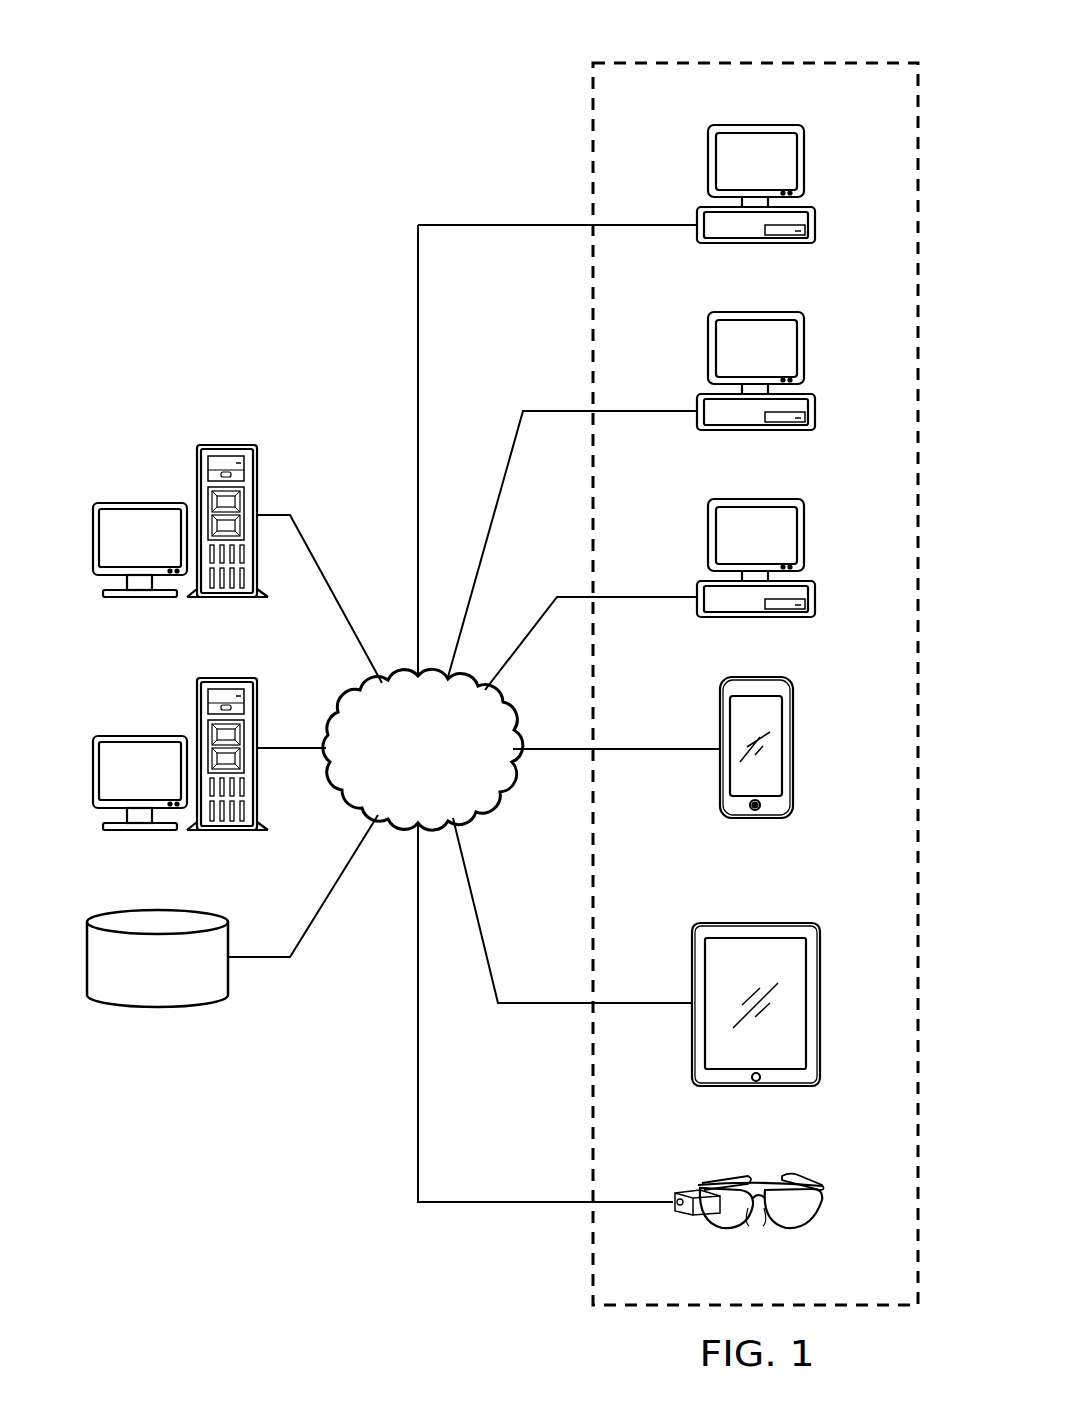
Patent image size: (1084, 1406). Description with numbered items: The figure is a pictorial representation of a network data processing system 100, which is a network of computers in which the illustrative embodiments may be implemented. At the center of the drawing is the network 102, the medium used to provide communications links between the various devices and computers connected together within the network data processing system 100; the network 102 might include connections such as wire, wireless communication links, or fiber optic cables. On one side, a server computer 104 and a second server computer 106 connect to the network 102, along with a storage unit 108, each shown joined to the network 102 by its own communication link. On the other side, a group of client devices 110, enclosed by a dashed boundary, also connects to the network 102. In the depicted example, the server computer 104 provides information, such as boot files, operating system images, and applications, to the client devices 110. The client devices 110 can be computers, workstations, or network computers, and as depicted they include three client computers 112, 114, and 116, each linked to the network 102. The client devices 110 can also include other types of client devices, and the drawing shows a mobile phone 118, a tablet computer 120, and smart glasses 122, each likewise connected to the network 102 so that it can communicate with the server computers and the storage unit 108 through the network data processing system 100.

The network data processing system 100 is at (276, 311).
The network 102 is at (440, 783).
The server computer 104 is at (140, 502).
The server computer 106 is at (140, 736).
The storage unit 108 is at (157, 1007).
The client devices 110 is at (831, 50).
The client computer 112 is at (803, 163).
The client computer 114 is at (803, 350).
The client computer 116 is at (803, 537).
The mobile phone 118 is at (793, 767).
The tablet computer 120 is at (820, 1015).
The smart glasses 122 is at (822, 1205).